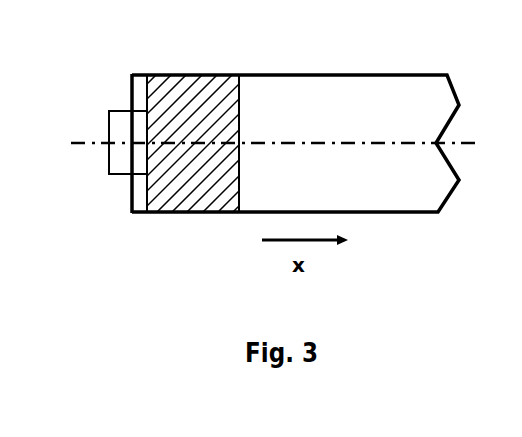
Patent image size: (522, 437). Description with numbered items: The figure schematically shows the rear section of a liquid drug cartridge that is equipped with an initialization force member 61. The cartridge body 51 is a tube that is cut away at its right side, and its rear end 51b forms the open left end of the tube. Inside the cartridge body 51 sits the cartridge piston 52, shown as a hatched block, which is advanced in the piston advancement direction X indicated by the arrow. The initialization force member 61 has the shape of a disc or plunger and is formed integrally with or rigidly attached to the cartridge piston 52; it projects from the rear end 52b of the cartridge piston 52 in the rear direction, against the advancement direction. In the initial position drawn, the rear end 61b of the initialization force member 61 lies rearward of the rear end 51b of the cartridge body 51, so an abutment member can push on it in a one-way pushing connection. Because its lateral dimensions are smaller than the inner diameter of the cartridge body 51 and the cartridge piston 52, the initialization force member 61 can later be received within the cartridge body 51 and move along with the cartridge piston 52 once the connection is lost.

The cartridge body 51 is at (333, 72).
The rear end of the cartridge body 51b is at (130, 212).
The cartridge piston 52 is at (208, 83).
The rear end of the cartridge piston 52b is at (146, 97).
The initialization force member 61 is at (123, 167).
The rear end of the initialization force member 61b is at (110, 124).